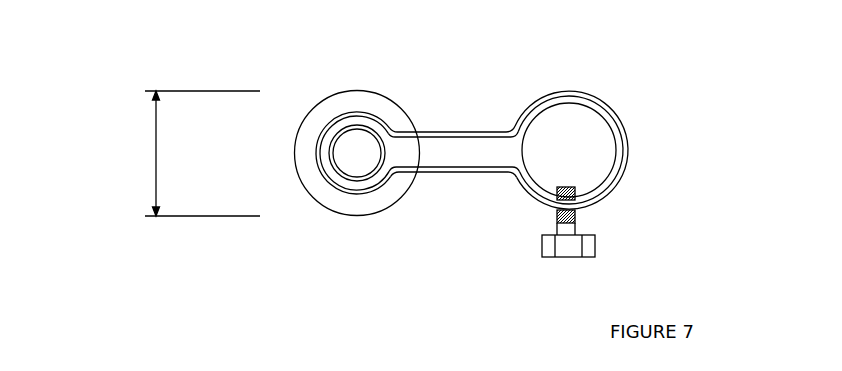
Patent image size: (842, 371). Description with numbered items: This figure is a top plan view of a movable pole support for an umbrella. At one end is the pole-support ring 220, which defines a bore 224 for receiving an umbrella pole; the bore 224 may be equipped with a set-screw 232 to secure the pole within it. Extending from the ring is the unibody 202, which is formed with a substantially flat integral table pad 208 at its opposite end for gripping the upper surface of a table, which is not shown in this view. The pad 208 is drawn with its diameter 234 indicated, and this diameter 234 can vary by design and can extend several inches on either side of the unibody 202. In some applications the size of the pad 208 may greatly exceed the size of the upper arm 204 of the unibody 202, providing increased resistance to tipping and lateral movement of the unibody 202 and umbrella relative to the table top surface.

The unibody 202 is at (453, 133).
The upper arm 204 is at (333, 173).
The integral table pad 208 is at (313, 126).
The pole-support ring 220 is at (570, 128).
The bore 224 is at (597, 148).
The set-screw 232 is at (542, 252).
The diameter 234 is at (155, 185).